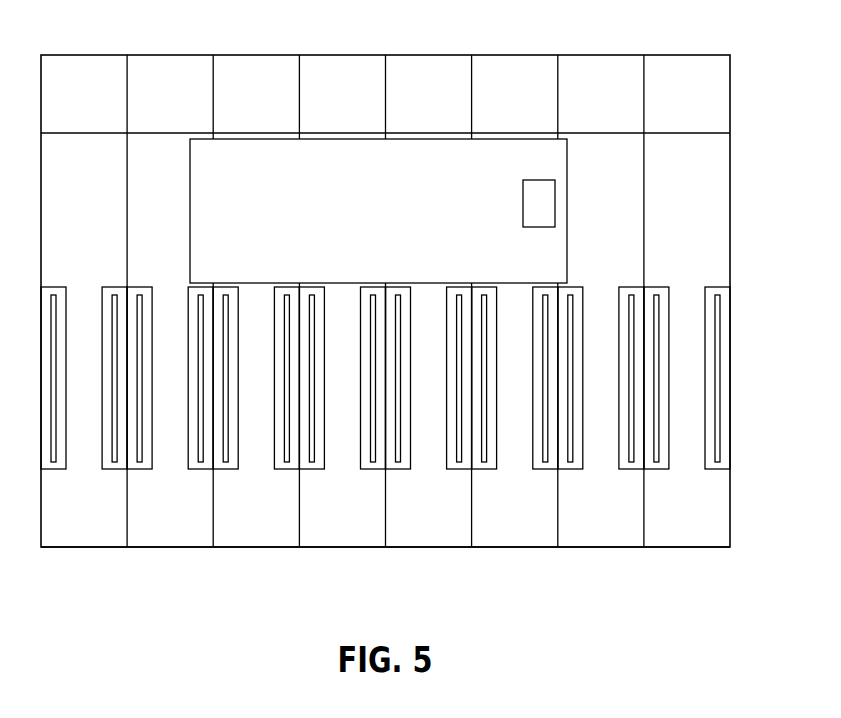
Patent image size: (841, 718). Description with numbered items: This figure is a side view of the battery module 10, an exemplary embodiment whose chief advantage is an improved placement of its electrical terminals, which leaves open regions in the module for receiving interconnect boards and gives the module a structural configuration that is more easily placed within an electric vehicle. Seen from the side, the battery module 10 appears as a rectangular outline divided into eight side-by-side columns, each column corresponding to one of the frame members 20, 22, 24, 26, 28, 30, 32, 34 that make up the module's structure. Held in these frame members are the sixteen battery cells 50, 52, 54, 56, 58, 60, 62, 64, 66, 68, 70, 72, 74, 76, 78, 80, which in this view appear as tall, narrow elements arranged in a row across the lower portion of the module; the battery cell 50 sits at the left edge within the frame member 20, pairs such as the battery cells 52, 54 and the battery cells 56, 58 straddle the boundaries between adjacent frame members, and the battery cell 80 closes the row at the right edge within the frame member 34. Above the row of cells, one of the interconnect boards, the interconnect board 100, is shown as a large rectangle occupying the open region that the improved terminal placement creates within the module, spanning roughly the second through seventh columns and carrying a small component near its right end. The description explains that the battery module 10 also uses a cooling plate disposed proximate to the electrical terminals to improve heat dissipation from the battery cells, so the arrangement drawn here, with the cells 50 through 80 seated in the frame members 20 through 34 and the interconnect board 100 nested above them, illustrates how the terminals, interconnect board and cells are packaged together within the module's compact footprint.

The battery module 10 is at (750, 75).
The interconnect board 100 is at (550, 159).
The frame member 20 is at (82, 532).
The frame member 22 is at (168, 532).
The frame member 24 is at (254, 532).
The frame member 26 is at (340, 532).
The frame member 28 is at (427, 532).
The frame member 30 is at (513, 532).
The frame member 32 is at (599, 532).
The frame member 34 is at (685, 532).
The battery cell 50 is at (54, 462).
The battery cell 52 is at (115, 462).
The battery cell 54 is at (140, 462).
The battery cell 56 is at (201, 462).
The battery cell 58 is at (226, 462).
The battery cell 60 is at (287, 462).
The battery cell 62 is at (312, 462).
The battery cell 64 is at (373, 462).
The battery cell 66 is at (398, 462).
The battery cell 68 is at (459, 462).
The battery cell 70 is at (484, 462).
The battery cell 72 is at (545, 462).
The battery cell 74 is at (570, 462).
The battery cell 76 is at (631, 462).
The battery cell 78 is at (656, 462).
The battery cell 80 is at (718, 462).